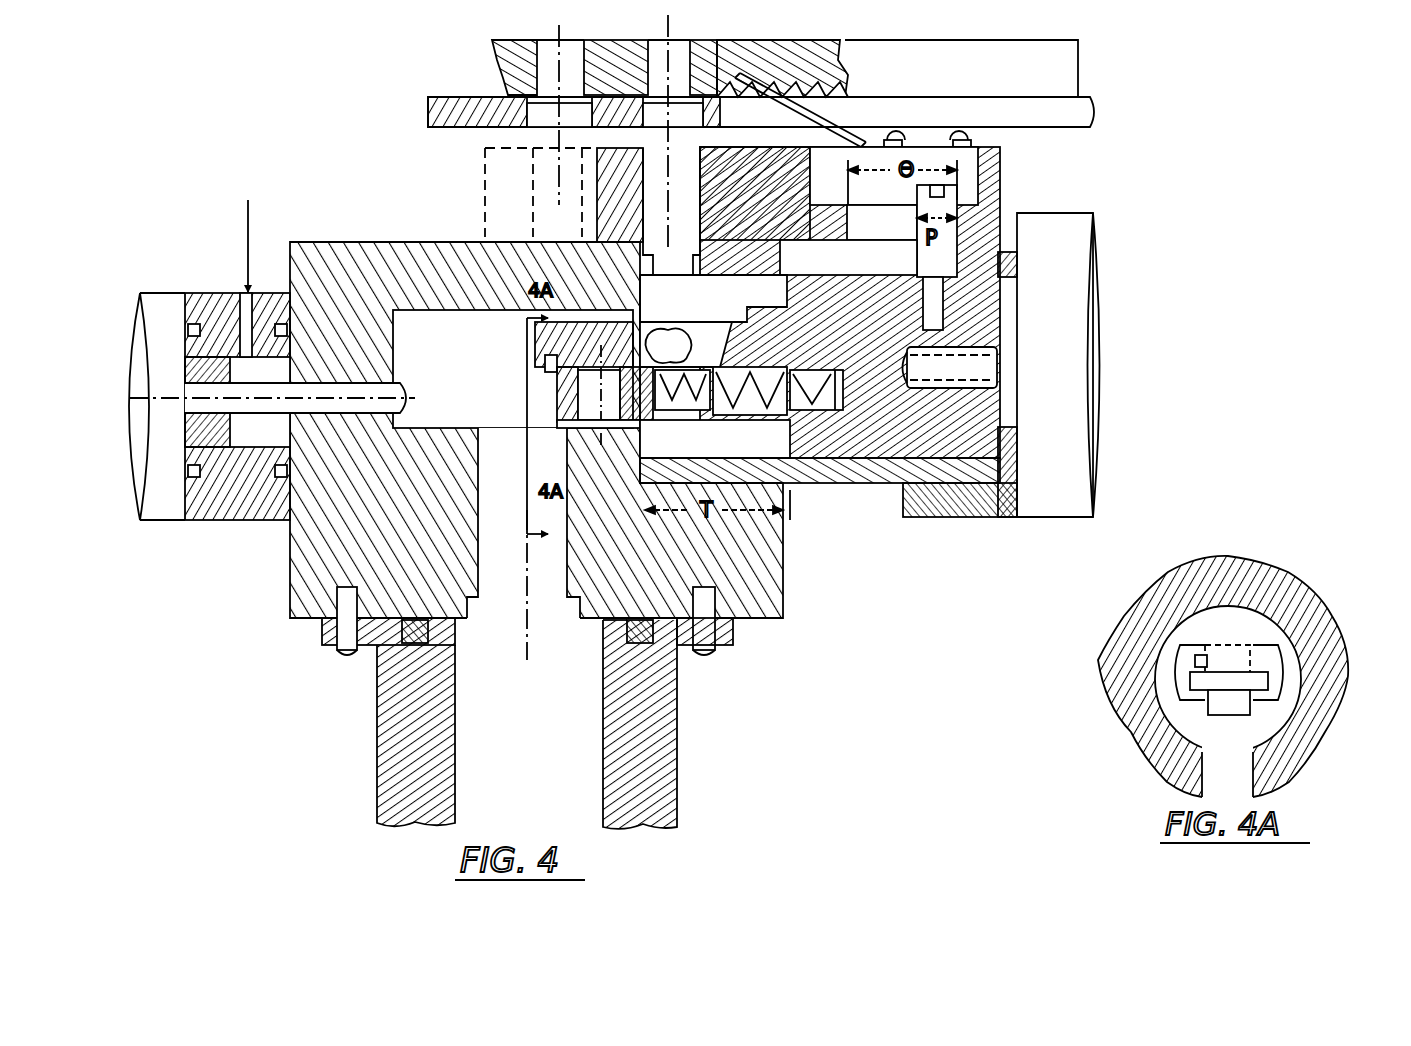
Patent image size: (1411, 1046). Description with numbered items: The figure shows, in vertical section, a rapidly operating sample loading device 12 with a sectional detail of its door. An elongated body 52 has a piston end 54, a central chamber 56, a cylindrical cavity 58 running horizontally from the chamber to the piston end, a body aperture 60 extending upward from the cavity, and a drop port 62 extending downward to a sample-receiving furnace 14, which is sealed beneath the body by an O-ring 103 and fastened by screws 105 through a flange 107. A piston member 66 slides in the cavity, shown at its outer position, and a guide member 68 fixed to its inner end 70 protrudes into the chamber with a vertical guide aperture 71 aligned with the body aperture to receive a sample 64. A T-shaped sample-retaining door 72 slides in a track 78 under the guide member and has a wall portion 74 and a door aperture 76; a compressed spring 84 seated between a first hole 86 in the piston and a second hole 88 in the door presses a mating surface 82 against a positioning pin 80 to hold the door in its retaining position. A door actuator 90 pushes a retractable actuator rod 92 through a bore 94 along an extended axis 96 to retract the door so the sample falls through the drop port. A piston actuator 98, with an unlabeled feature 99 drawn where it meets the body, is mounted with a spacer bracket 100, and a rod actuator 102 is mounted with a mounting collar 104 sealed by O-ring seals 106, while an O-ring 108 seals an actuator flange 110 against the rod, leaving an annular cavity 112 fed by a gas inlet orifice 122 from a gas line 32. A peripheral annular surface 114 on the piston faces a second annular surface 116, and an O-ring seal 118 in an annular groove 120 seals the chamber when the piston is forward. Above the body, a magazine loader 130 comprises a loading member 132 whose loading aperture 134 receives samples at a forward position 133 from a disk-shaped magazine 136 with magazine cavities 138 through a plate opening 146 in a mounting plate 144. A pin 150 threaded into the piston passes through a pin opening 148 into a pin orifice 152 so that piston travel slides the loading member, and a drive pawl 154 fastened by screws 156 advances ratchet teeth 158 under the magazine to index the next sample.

In FIG. 4, the sample loading device 12 is at (860, 580).
In FIG. 4, the sample-receiving furnace 14 is at (372, 748).
In FIG. 4, the gas line 32 is at (248, 215).
In FIG. 4, the elongated body 52 is at (288, 602).
In FIG. 4, the piston end 54 is at (855, 490).
In FIG. 4, the central chamber 56 is at (472, 347).
In FIG. 4, the cylindrical cavity 58 is at (728, 317).
In FIG. 4, the body aperture 60 is at (676, 270).
In FIG. 4, the drop port 62 is at (512, 504).
In FIG. 4A, the drop port 62 is at (1240, 801).
In FIG. 4, the sample 64 is at (668, 365).
In FIG. 4, the piston member 66 is at (855, 329).
In FIG. 4, the guide member 68 is at (535, 343).
In FIG. 4A, the guide member 68 is at (1290, 655).
In FIG. 4, the inner end 70 is at (780, 362).
In FIG. 4, the guide aperture 71 is at (718, 342).
In FIG. 4, the sample-retaining door 72 is at (565, 410).
In FIG. 4A, the sample-retaining door 72 is at (1250, 712).
In FIG. 4, the wall portion 74 is at (722, 349).
In FIG. 4, the door aperture 76 is at (612, 409).
In FIG. 4, the track 78 is at (580, 425).
In FIG. 4A, the track 78 is at (1285, 675).
In FIG. 4, the positioning pin 80 is at (545, 359).
In FIG. 4A, the positioning pin 80 is at (1207, 658).
In FIG. 4, the mating surface 82 is at (557, 395).
In FIG. 4A, the mating surface 82 is at (1195, 700).
In FIG. 4, the compressed spring 84 is at (742, 415).
In FIG. 4, the first hole 86 is at (805, 420).
In FIG. 4, the second hole 88 is at (688, 415).
In FIG. 4, the door actuator 90 is at (243, 560).
In FIG. 4, the retractable actuator rod 92 is at (402, 395).
In FIG. 4, the bore 94 is at (400, 370).
In FIG. 4, the extended axis 96 is at (407, 398).
In FIG. 4, the piston actuator 98 is at (1060, 461).
In FIG. 4, the roller 99 is at (990, 362).
In FIG. 4, the spacer bracket 100 is at (975, 520).
In FIG. 4, the rod actuator 102 is at (172, 466).
In FIG. 4, the O-ring 103 is at (450, 655).
In FIG. 4, the mounting collar 104 is at (197, 292).
In FIG. 4, the screws 105 is at (345, 650).
In FIG. 4, the O-ring seals 106 is at (280, 477).
In FIG. 4, the flange 107 is at (322, 640).
In FIG. 4, the O-ring 108 is at (200, 425).
In FIG. 4, the actuator flange 110 is at (195, 365).
In FIG. 4, the annular cavity 112 is at (272, 378).
In FIG. 4, the peripheral annular surface 114 is at (792, 442).
In FIG. 4, the second annular surface 116 is at (640, 282).
In FIG. 4, the O-ring seal 118 is at (792, 300).
In FIG. 4, the annular groove 120 is at (795, 275).
In FIG. 4, the gas inlet orifice 122 is at (246, 293).
In FIG. 4, the magazine loader 130 is at (452, 55).
In FIG. 4, the loading member 132 is at (600, 148).
In FIG. 4, the forward position 133 is at (485, 195).
In FIG. 4, the loading aperture 134 is at (700, 220).
In FIG. 4, the magazine 136 is at (932, 45).
In FIG. 4, the magazine cavities 138 is at (678, 48).
In FIG. 4, the mounting plate 144 is at (428, 112).
In FIG. 4, the plate opening 146 is at (548, 120).
In FIG. 4, the pin opening 148 is at (897, 269).
In FIG. 4, the pin 150 is at (917, 192).
In FIG. 4, the pin orifice 152 is at (892, 234).
In FIG. 4, the drive pawl 154 is at (800, 102).
In FIG. 4, the screws 156 is at (925, 135).
In FIG. 4, the ratchet teeth 158 is at (865, 110).